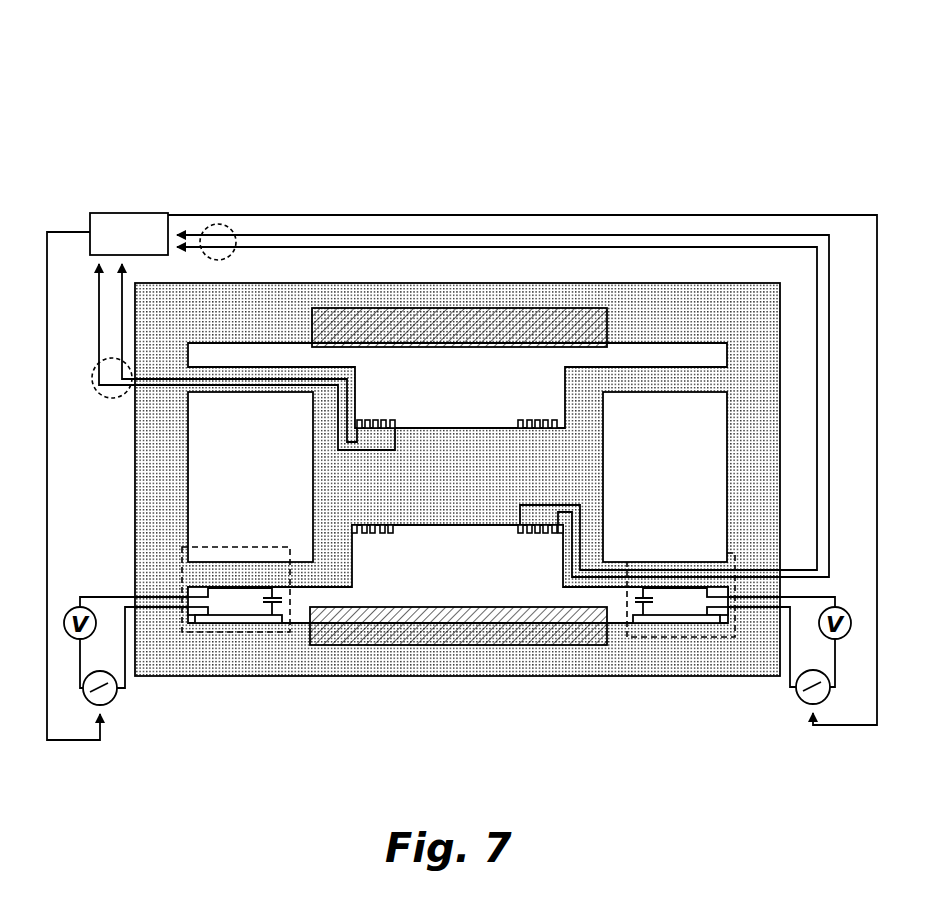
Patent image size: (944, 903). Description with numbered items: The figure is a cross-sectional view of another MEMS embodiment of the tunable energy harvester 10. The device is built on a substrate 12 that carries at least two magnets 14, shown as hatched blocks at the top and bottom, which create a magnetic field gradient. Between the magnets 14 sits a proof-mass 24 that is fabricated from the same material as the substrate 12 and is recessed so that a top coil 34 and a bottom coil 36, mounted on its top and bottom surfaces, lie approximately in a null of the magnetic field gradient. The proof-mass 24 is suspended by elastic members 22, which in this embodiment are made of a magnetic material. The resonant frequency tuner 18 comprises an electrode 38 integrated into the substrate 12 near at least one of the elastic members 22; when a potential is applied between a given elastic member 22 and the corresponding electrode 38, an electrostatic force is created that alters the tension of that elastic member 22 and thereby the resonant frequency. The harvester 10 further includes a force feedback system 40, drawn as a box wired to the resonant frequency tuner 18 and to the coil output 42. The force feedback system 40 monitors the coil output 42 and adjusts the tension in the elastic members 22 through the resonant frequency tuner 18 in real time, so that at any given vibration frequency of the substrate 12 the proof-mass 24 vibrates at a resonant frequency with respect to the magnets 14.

The tunable energy harvester 10 is at (160, 67).
The substrate 12 is at (137, 459).
The magnets 14 is at (390, 347).
The resonant frequency tuner 18 is at (273, 633).
The elastic members 22 is at (232, 392).
The proof-mass 24 is at (603, 458).
The top coil 34 is at (403, 422).
The bottom coil 36 is at (517, 531).
The electrode 38 is at (247, 623).
The force feedback system 40 is at (136, 213).
The coil output 42 is at (218, 224).